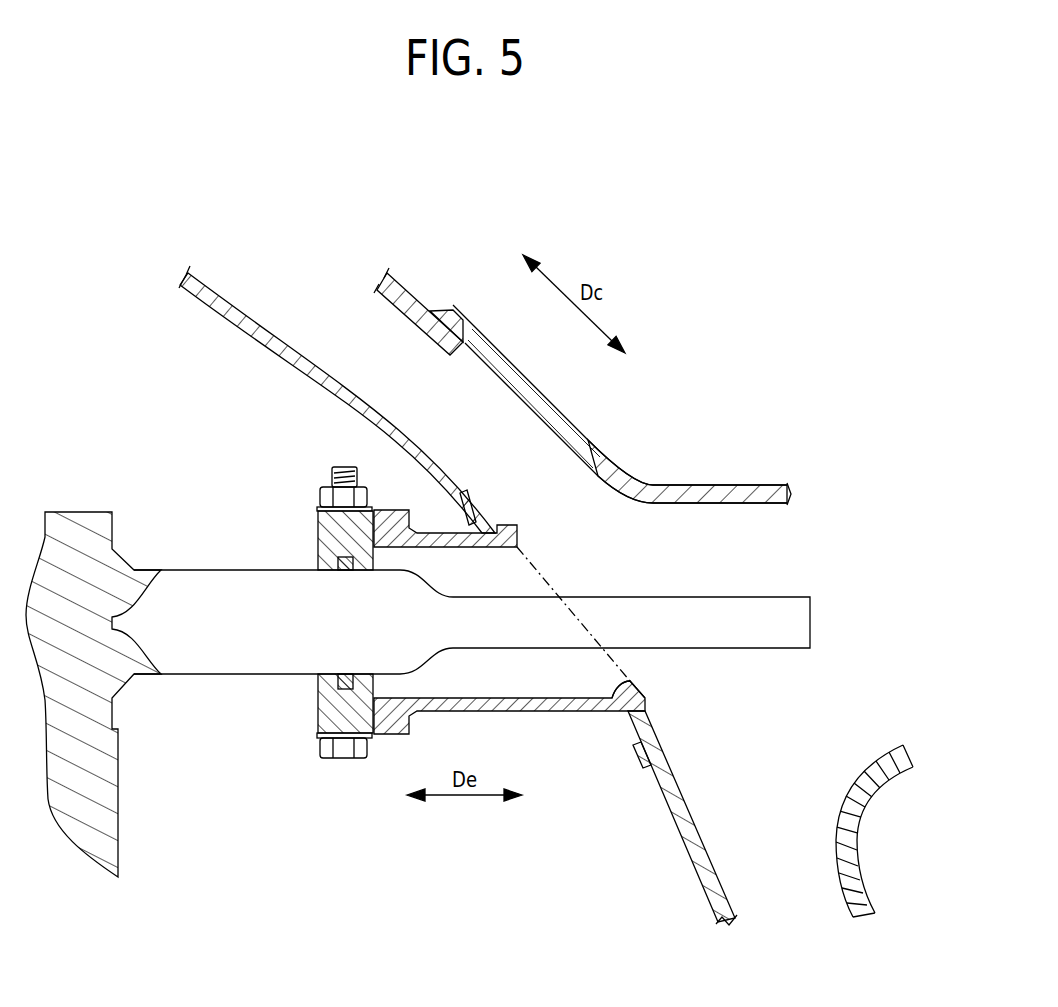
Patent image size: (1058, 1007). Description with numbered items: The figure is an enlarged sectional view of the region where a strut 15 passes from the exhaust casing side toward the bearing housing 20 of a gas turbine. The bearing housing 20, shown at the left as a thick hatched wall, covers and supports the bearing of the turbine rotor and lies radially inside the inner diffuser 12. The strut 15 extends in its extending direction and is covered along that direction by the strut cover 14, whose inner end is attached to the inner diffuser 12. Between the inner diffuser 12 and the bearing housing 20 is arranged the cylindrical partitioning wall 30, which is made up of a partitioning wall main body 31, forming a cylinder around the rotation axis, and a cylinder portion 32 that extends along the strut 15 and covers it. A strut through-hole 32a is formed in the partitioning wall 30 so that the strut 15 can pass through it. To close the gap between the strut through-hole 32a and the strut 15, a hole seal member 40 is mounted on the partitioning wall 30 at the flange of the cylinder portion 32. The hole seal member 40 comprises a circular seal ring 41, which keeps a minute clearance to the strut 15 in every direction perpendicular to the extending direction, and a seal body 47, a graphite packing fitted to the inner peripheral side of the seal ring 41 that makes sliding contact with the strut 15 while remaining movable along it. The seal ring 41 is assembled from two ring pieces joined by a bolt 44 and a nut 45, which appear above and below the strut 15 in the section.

The inner diffuser 12 is at (407, 308).
The strut cover 14 is at (740, 487).
The strut 15 is at (710, 612).
The bearing housing 20 is at (80, 527).
The partitioning wall 30 is at (577, 717).
The partitioning wall main body 31 is at (663, 787).
The cylinder portion 32 is at (570, 702).
The strut through-hole 32a is at (632, 682).
The hole seal member 40 is at (332, 708).
The circular seal ring 41 is at (345, 703).
The bolt 44 is at (343, 758).
The nut 45 is at (327, 495).
The seal body 47 is at (340, 560).